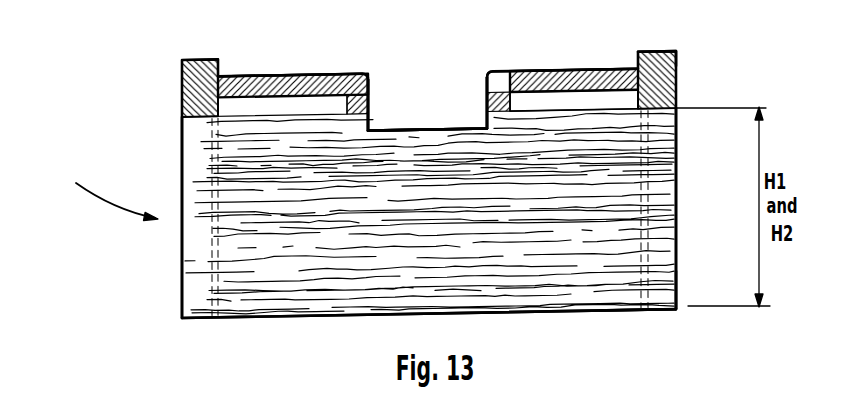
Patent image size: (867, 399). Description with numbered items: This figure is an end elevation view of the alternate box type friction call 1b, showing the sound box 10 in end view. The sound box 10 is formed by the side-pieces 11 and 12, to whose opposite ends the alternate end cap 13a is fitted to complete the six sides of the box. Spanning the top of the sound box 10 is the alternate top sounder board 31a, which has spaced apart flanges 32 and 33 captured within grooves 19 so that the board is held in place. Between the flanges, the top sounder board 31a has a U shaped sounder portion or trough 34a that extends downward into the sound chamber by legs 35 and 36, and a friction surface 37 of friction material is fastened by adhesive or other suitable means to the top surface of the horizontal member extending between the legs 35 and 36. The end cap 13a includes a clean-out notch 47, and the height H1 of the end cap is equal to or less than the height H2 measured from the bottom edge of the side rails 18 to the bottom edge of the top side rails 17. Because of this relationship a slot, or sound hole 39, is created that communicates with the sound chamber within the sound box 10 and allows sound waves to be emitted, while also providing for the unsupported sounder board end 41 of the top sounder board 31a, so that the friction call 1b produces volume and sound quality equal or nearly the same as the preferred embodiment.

The box type friction call 1b is at (90, 0).
The sound box 10 is at (173, 197).
The side-piece 11 is at (663, 218).
The side-piece 12 is at (185, 278).
The alternate end cap 13a is at (547, 273).
The top side rail 17 is at (675, 53).
The side rail 18 is at (660, 303).
The groove 19 is at (182, 77).
The alternate top sounder board 31a is at (290, 75).
The flange 32 is at (312, 75).
The flange 33 is at (603, 72).
The U shaped sounder portion or trough 34a is at (437, 118).
The leg 35 is at (485, 110).
The leg 36 is at (372, 112).
The friction surface 37 is at (410, 128).
The sound hole 39 is at (577, 78).
The unsupported sounder board end 41 is at (553, 110).
The clean-out notch 47 is at (390, 132).